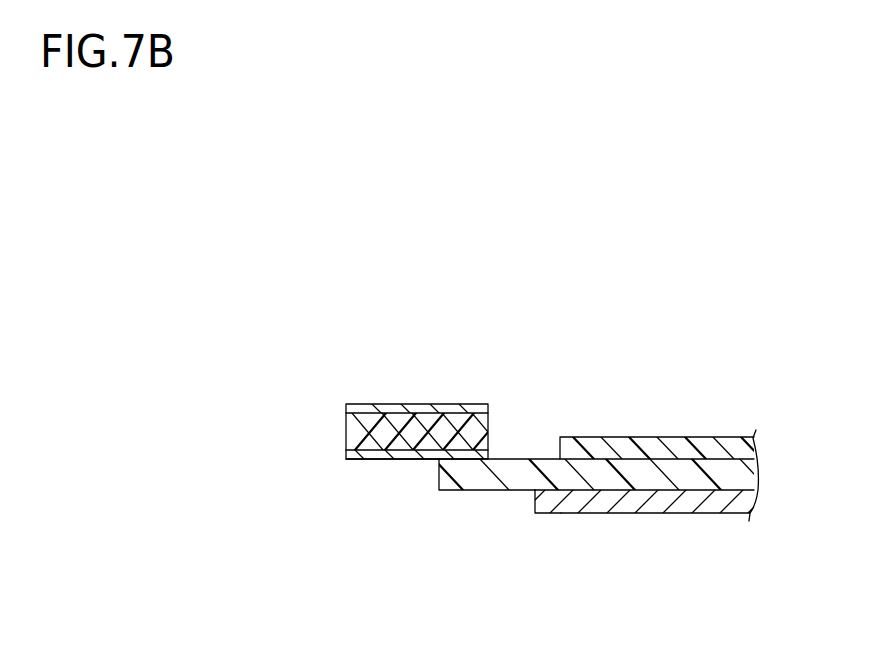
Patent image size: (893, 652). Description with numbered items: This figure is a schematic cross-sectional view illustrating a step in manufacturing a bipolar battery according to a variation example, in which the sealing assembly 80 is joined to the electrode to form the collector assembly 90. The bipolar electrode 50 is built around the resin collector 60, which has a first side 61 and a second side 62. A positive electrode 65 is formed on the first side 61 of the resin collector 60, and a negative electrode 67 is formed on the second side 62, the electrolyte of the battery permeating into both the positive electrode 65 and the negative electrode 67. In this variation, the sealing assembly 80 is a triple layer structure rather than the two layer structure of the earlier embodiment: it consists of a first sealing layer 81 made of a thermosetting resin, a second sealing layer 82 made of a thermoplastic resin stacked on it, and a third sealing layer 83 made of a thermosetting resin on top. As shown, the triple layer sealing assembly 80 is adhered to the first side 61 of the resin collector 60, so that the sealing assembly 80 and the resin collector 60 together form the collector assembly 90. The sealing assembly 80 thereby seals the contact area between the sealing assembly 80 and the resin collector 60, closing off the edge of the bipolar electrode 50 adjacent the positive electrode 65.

The sealing assembly 80 is at (298, 385).
The third sealing layer 83 is at (350, 410).
The second sealing layer 82 is at (350, 424).
The first sealing layer 81 is at (347, 453).
The collector assembly 90 is at (527, 412).
The bipolar electrode 50 is at (737, 390).
The negative electrode 67 is at (600, 497).
The resin collector 60 is at (655, 472).
The positive electrode 65 is at (712, 452).
The first side 61 is at (512, 460).
The second side 62 is at (562, 492).